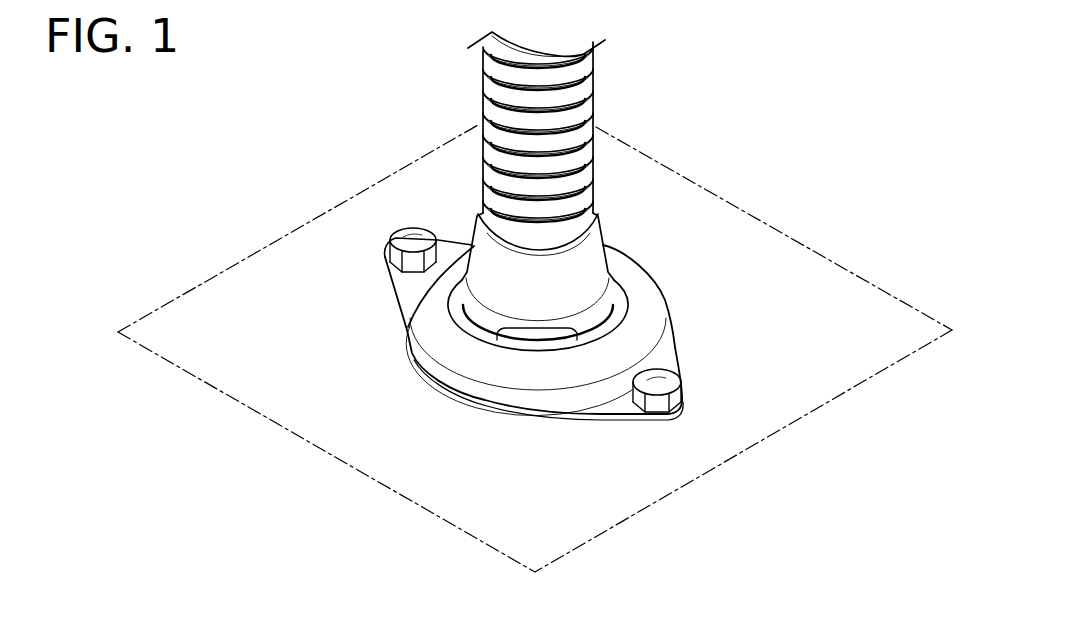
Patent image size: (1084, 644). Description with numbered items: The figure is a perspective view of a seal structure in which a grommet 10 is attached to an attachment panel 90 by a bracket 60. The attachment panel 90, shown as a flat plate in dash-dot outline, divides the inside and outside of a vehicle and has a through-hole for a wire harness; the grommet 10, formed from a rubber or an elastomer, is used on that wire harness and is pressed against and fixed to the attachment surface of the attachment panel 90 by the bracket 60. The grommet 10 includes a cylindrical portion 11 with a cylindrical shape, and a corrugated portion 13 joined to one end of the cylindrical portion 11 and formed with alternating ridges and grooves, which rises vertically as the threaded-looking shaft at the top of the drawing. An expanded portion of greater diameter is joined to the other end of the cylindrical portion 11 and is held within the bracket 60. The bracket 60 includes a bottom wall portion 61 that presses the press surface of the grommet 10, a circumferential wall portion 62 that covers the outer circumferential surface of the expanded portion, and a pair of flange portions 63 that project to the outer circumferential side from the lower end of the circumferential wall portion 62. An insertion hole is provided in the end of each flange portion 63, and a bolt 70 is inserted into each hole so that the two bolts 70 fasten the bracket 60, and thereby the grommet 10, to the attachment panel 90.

The grommet 10 is at (612, 200).
The cylindrical portion 11 is at (610, 228).
The corrugated portion 13 is at (595, 80).
The bracket 60 is at (659, 260).
The bottom wall portion 61 is at (648, 291).
The circumferential wall portion 62 is at (657, 337).
The flange portions 63 is at (398, 278).
The bolt 70 is at (407, 240).
The attachment panel 90 is at (903, 360).